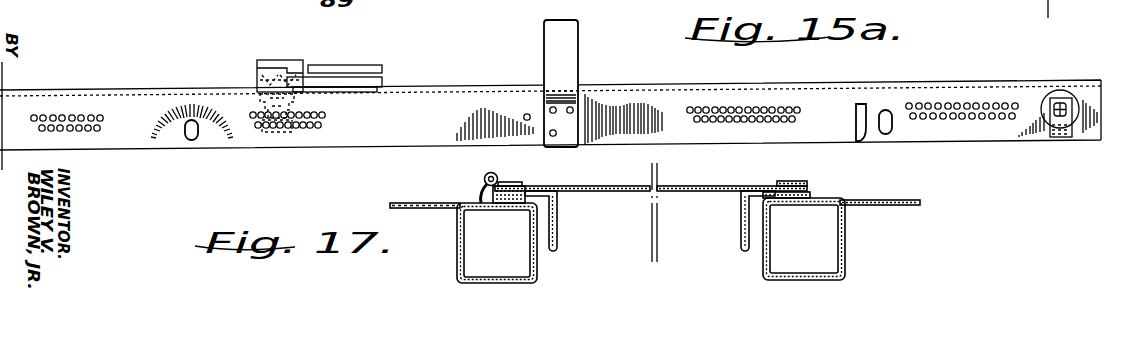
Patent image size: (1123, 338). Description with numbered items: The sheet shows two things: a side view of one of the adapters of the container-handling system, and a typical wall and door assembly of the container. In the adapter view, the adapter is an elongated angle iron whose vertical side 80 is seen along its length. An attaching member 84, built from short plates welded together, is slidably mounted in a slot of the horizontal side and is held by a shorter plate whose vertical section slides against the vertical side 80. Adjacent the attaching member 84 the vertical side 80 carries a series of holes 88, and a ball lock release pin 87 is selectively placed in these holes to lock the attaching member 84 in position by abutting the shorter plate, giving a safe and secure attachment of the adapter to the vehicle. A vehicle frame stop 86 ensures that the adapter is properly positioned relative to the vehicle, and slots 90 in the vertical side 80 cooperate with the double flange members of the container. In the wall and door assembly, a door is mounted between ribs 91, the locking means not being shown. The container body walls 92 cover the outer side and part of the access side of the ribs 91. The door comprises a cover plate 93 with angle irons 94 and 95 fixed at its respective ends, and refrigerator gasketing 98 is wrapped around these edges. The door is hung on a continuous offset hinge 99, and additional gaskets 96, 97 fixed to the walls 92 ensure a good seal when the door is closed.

In FIG. 15A, the vertical side 80 is at (445, 100).
In FIG. 15A, the attaching member 84 is at (337, 52).
In FIG. 15A, the vehicle frame stop 86 is at (563, 66).
In FIG. 15A, the ball lock release pin 87 is at (866, 105).
In FIG. 15A, the holes 88 is at (83, 115).
In FIG. 15A, the slot 90 is at (197, 116).
In FIG. 17, the rib 91 is at (457, 271).
In FIG. 17, the container body wall 92 is at (413, 188).
In FIG. 17, the cover plate 93 is at (620, 176).
In FIG. 17, the angle iron 94 is at (557, 237).
In FIG. 17, the angle iron 95 is at (742, 224).
In FIG. 17, the gasket 96 is at (513, 205).
In FIG. 17, the gasket 97 is at (803, 204).
In FIG. 17, the refrigerator gasketing 98 is at (522, 186).
In FIG. 17, the continuous offset hinge 99 is at (486, 183).